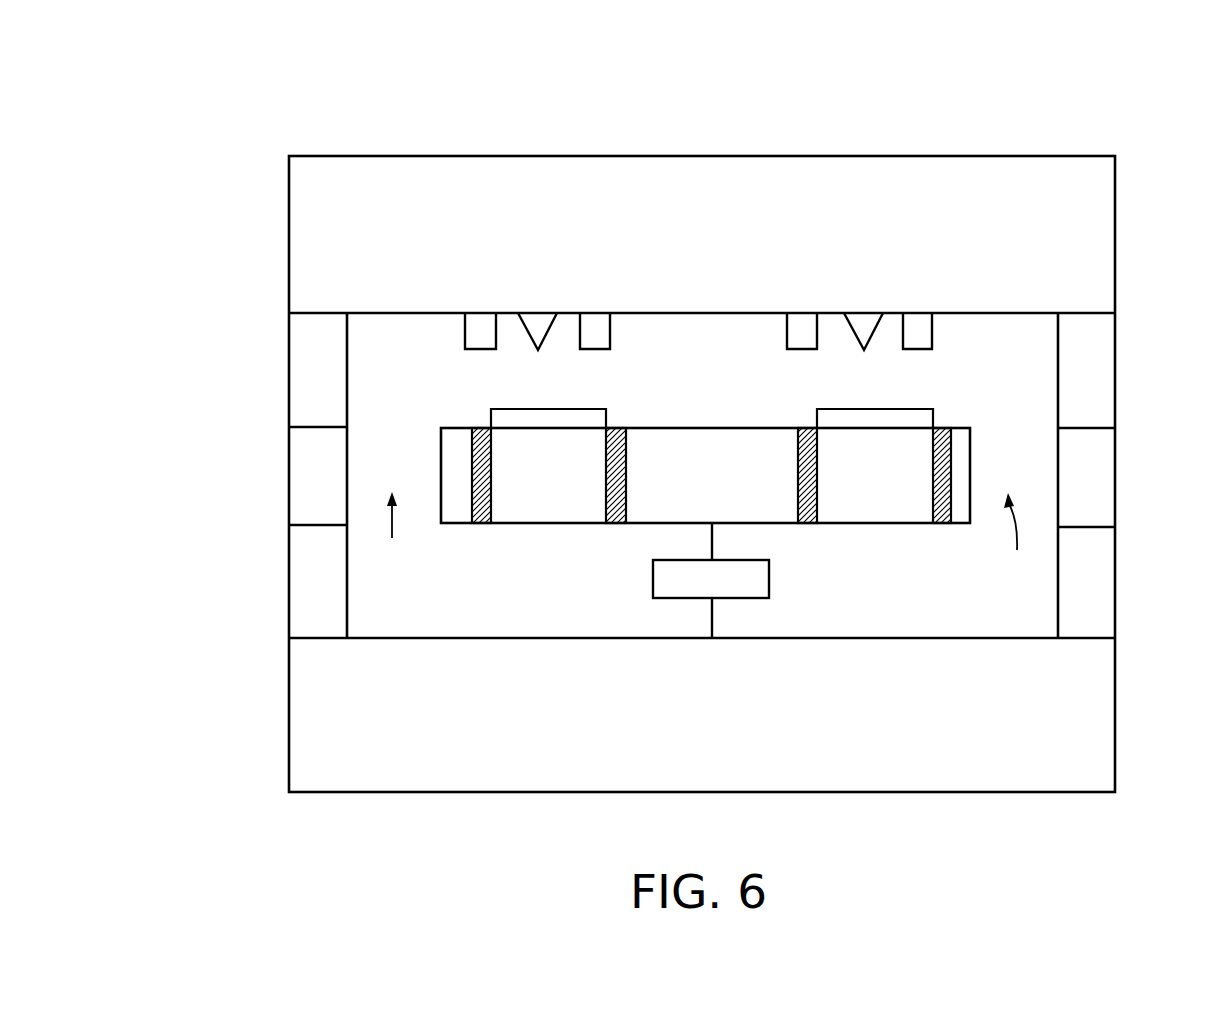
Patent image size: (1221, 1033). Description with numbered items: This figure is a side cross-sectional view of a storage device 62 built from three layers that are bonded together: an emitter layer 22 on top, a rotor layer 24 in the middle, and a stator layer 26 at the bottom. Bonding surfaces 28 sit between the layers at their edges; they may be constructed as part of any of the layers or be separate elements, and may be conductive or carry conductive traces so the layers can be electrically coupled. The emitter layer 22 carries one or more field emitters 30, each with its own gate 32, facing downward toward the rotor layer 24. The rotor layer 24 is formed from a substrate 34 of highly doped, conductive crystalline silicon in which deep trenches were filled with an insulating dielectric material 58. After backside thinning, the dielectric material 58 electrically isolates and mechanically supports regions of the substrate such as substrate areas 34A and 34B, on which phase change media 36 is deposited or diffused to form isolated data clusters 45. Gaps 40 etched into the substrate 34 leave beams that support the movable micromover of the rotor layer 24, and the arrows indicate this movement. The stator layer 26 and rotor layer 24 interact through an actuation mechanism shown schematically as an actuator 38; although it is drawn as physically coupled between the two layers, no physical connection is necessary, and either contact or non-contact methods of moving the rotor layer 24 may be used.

The emitter layer 22 is at (260, 161).
The rotor layer 24 is at (263, 426).
The stator layer 26 is at (270, 637).
The bonding surfaces 28 is at (322, 398).
The field emitter 30 is at (543, 322).
The gate 32 is at (488, 322).
The substrate 34 is at (327, 453).
The substrate area 34A is at (562, 502).
The substrate area 34B is at (891, 495).
The phase change media 36 is at (742, 400).
The data clusters 45 is at (538, 420).
The actuator 38 is at (755, 578).
The gaps 40 is at (707, 536).
The dielectric material 58 is at (481, 428).
The storage device 62 is at (1120, 118).